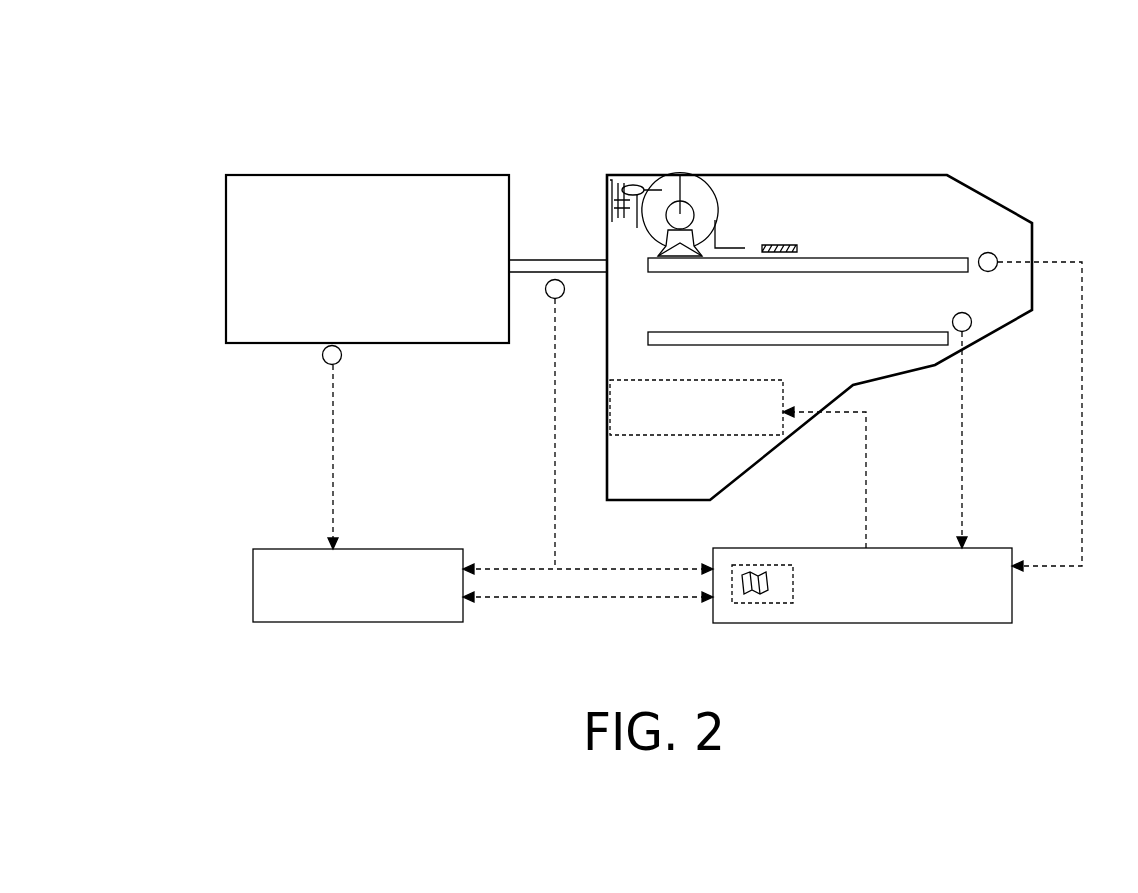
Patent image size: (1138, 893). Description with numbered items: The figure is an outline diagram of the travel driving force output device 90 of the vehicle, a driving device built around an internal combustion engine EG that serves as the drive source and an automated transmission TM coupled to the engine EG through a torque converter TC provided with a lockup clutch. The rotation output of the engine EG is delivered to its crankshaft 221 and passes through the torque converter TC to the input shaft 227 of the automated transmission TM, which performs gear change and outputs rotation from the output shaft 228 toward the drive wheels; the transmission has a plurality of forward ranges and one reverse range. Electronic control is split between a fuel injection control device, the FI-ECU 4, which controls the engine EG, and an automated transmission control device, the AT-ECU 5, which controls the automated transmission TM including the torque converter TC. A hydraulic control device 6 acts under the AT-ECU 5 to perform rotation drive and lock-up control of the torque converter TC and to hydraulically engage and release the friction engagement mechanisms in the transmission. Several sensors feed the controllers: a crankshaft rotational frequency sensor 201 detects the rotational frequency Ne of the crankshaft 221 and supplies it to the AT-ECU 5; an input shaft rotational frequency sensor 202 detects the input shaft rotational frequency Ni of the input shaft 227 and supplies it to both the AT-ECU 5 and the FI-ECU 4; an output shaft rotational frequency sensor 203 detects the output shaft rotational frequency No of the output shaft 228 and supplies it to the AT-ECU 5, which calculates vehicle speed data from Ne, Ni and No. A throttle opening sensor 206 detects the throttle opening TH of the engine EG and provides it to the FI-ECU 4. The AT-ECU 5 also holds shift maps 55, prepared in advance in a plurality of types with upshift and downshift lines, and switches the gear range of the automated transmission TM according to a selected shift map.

The travel driving force output device 90 is at (1042, 122).
The engine EG is at (392, 175).
The torque converter TC is at (713, 189).
The automated transmission TM is at (840, 175).
The crankshaft 221 is at (535, 260).
The crankshaft rotational frequency sensor 201 is at (553, 298).
The throttle opening sensor 206 is at (327, 364).
The input shaft 227 is at (828, 258).
The output shaft 228 is at (836, 316).
The input shaft rotational frequency sensor 202 is at (992, 253).
The output shaft rotational frequency sensor 203 is at (992, 308).
The hydraulic control device 6 is at (678, 437).
The FI-ECU 4 is at (410, 549).
The AT-ECU 5 is at (884, 548).
The shift maps 55 is at (776, 565).
The rotational frequency of the crankshaft Ne is at (539, 434).
The throttle opening TH is at (317, 457).
The input shaft rotational frequency Ni is at (1052, 416).
The output shaft rotational frequency No is at (975, 440).